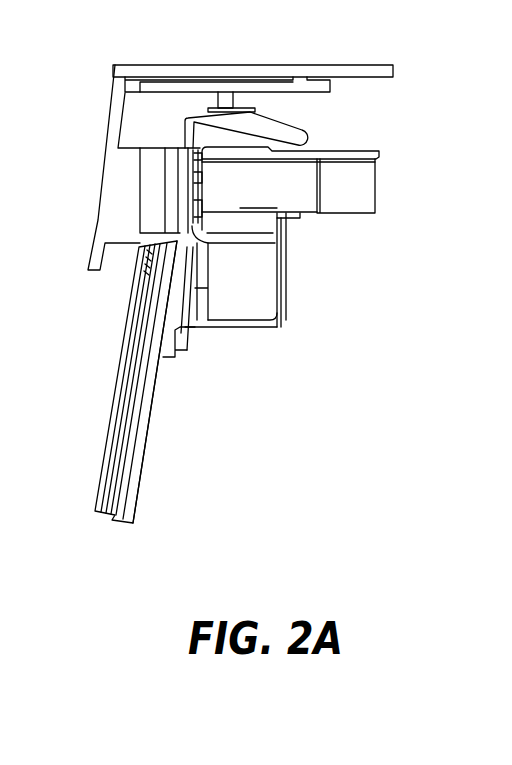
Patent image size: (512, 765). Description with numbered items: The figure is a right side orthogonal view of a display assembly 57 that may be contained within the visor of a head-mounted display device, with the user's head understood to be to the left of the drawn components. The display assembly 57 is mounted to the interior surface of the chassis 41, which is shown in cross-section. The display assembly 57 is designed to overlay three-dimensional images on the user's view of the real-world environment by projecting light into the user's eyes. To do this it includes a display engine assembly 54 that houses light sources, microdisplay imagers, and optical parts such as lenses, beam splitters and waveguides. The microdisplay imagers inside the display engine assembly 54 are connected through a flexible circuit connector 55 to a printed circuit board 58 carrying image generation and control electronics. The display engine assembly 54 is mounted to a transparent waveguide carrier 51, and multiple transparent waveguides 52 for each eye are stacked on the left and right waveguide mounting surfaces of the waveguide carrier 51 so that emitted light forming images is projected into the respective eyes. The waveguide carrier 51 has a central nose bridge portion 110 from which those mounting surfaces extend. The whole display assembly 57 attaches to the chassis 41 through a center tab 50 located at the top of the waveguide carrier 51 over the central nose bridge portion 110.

The chassis 41 is at (103, 183).
The center tab 50 is at (138, 224).
The waveguide carrier 51 is at (139, 496).
The transparent waveguides 52 is at (88, 433).
The display engine assembly 54 is at (347, 215).
The flexible circuit connector 55 is at (307, 140).
The display assembly 57 is at (406, 147).
The printed circuit board 58 is at (152, 93).
The central nose bridge portion 110 is at (175, 348).